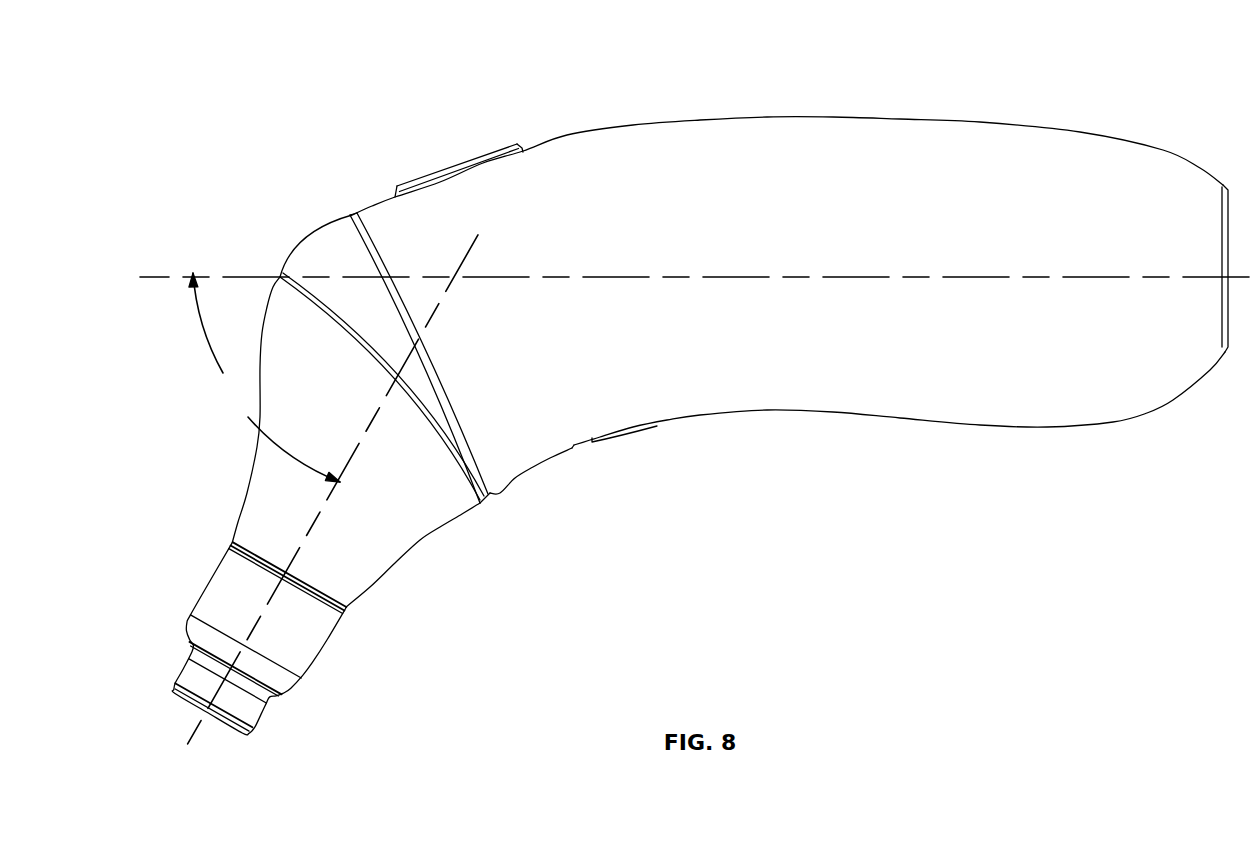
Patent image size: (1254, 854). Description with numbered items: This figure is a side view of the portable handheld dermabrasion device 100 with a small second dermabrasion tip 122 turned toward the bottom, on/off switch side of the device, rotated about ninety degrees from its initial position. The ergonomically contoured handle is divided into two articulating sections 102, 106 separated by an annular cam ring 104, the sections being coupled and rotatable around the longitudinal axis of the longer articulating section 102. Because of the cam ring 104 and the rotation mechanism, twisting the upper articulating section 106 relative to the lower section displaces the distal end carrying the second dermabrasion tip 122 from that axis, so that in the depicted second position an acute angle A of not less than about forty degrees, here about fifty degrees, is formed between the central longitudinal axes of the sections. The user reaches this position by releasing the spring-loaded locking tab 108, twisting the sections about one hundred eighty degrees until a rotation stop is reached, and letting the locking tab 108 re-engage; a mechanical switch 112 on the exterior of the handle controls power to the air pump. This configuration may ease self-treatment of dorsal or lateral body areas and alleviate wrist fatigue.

The portable handheld dermabrasion device 100 is at (257, 85).
The articulating section 102 is at (933, 138).
The annular cam ring 104 is at (328, 243).
The articulating section 106 is at (400, 540).
The locking tab 108 is at (455, 167).
The mechanical switch 112 is at (607, 438).
The second dermabrasion tip 122 is at (315, 642).